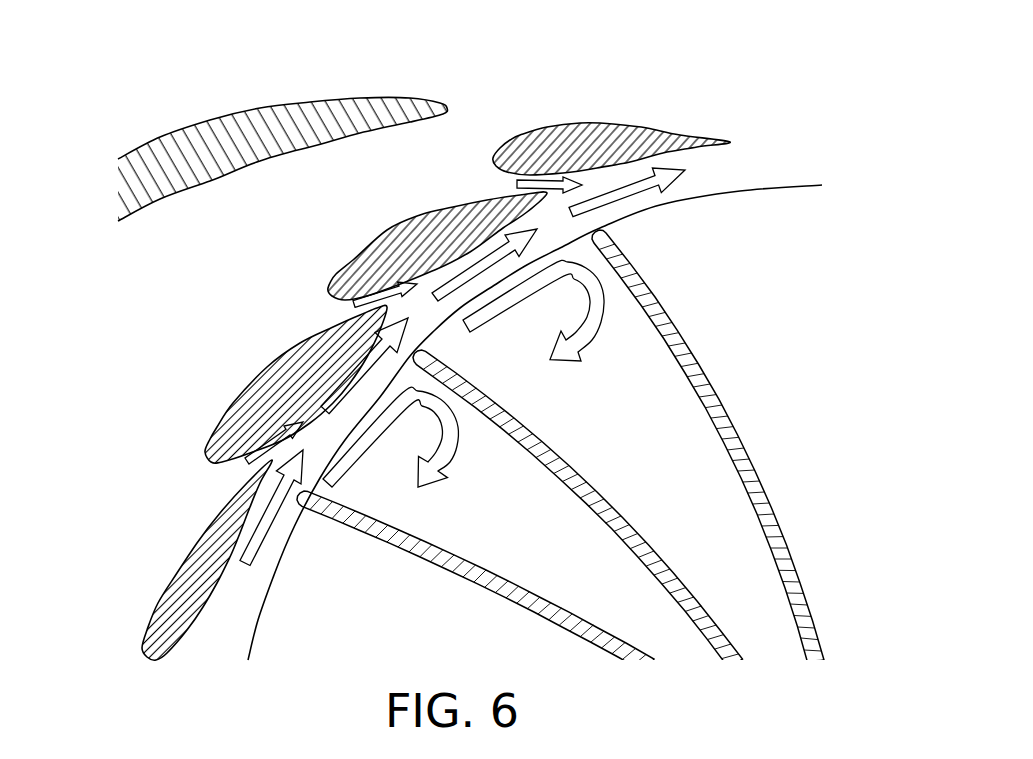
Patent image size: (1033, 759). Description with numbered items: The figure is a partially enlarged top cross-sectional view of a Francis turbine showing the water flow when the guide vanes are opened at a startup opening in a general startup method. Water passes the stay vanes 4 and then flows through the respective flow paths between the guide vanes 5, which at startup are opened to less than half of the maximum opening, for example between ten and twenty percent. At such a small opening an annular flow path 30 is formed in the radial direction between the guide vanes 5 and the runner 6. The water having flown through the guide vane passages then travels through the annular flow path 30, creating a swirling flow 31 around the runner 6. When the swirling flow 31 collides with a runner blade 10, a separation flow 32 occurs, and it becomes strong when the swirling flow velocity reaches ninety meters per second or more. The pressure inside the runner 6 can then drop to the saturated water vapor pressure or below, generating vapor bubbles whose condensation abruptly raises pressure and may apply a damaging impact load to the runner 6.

The stay vane 4 is at (315, 124).
The guide vane 5 is at (344, 270).
The runner 6 is at (721, 250).
The runner blade 10 is at (520, 417).
The annular flow path 30 is at (418, 313).
The swirling flow 31 is at (478, 265).
The separation flow 32 is at (483, 317).